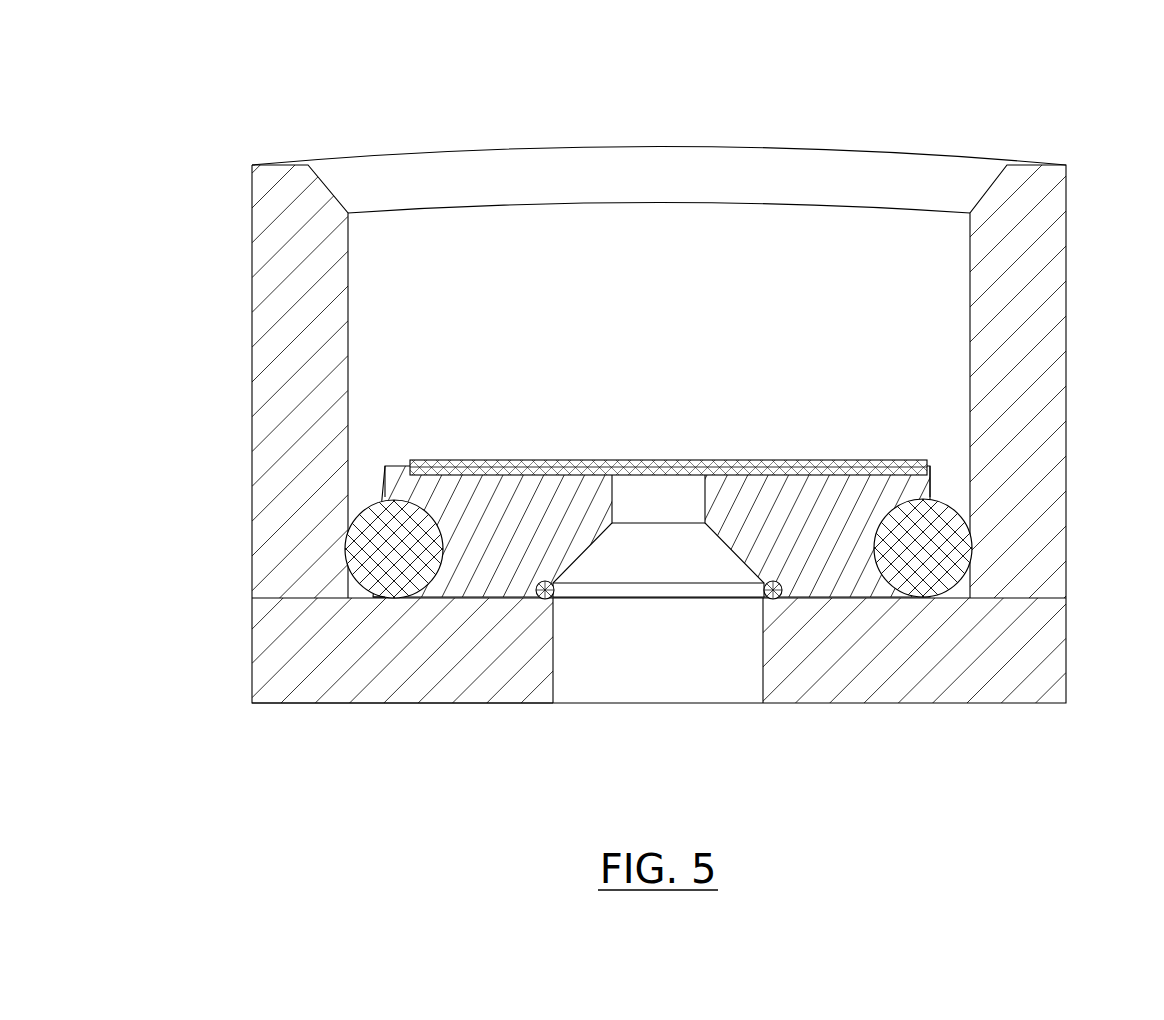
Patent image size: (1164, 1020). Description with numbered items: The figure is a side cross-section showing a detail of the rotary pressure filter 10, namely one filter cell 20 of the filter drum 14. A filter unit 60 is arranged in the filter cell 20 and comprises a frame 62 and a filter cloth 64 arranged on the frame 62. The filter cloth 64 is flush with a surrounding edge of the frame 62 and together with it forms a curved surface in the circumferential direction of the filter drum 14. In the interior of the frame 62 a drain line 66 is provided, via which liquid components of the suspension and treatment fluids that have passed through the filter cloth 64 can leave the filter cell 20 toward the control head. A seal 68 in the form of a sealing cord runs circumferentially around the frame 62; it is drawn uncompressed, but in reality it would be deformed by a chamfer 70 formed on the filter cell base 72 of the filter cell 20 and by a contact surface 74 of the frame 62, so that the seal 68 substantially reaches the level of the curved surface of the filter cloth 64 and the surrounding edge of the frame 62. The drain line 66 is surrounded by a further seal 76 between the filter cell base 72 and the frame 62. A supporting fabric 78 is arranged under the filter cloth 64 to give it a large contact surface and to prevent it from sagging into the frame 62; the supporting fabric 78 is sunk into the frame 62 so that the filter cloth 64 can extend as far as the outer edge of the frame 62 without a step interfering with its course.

The rotary pressure filter 10 is at (353, 98).
The filter drum 14 is at (283, 200).
The filter cell 20 is at (647, 238).
The filter unit 60 is at (912, 495).
The frame 62 is at (802, 553).
The filter cloth 64 is at (410, 468).
The drain line 66 is at (632, 563).
The seal 68 is at (372, 540).
The chamfer 70 is at (375, 575).
The filter cell base 72 is at (493, 600).
The contact surface 74 is at (390, 493).
The further seal 76 is at (773, 593).
The supporting fabric 78 is at (887, 474).